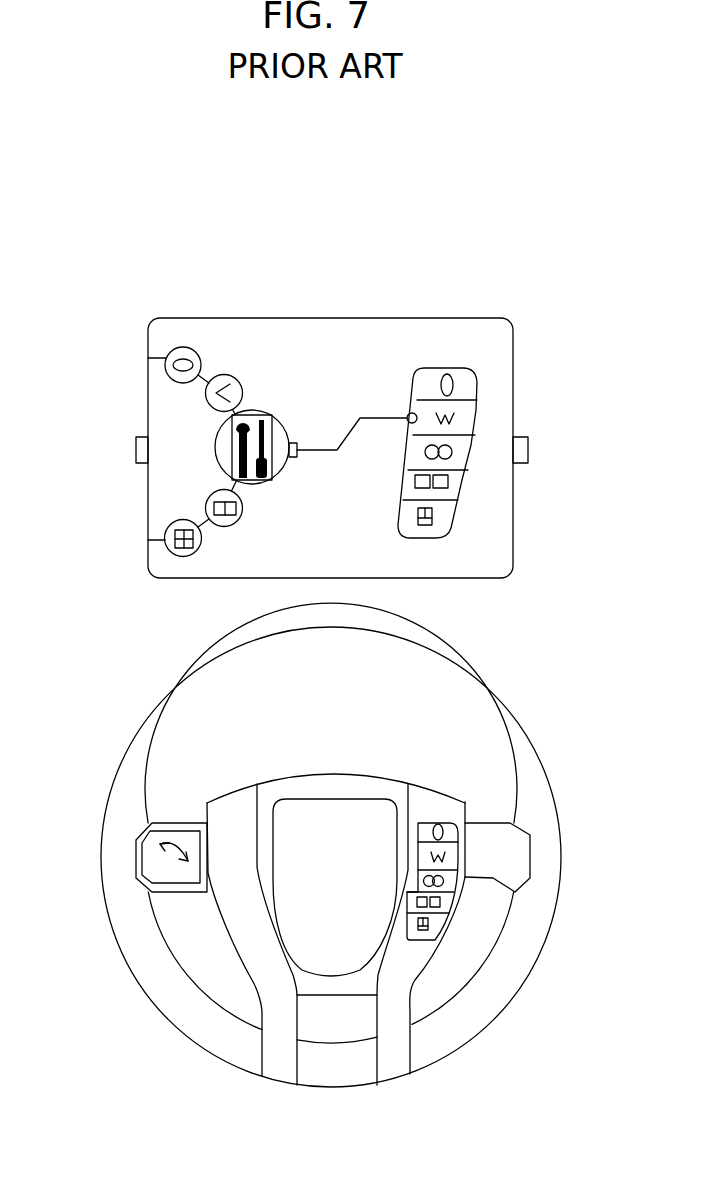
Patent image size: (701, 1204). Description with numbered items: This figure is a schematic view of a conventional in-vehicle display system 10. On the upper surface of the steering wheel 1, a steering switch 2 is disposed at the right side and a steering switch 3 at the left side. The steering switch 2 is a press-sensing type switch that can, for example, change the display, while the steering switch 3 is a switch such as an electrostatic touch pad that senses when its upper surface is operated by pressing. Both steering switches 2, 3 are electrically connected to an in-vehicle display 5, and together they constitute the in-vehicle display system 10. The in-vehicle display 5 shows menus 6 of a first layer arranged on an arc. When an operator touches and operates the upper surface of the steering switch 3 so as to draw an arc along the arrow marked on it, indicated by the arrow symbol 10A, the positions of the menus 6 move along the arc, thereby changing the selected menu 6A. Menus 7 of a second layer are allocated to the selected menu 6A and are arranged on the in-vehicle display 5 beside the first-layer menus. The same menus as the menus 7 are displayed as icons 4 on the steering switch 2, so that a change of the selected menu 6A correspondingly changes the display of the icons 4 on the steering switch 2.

The steering wheel 1 is at (497, 730).
The steering switch 2 is at (523, 910).
The steering switch 3 is at (110, 877).
The icon 4 is at (435, 882).
The in-vehicle display 5 is at (509, 449).
The menu 6 is at (170, 545).
The selected menu 6A is at (230, 445).
The menu 7 is at (447, 457).
The in-vehicle display system 10 is at (502, 240).
The operation switch icon 10A is at (165, 856).